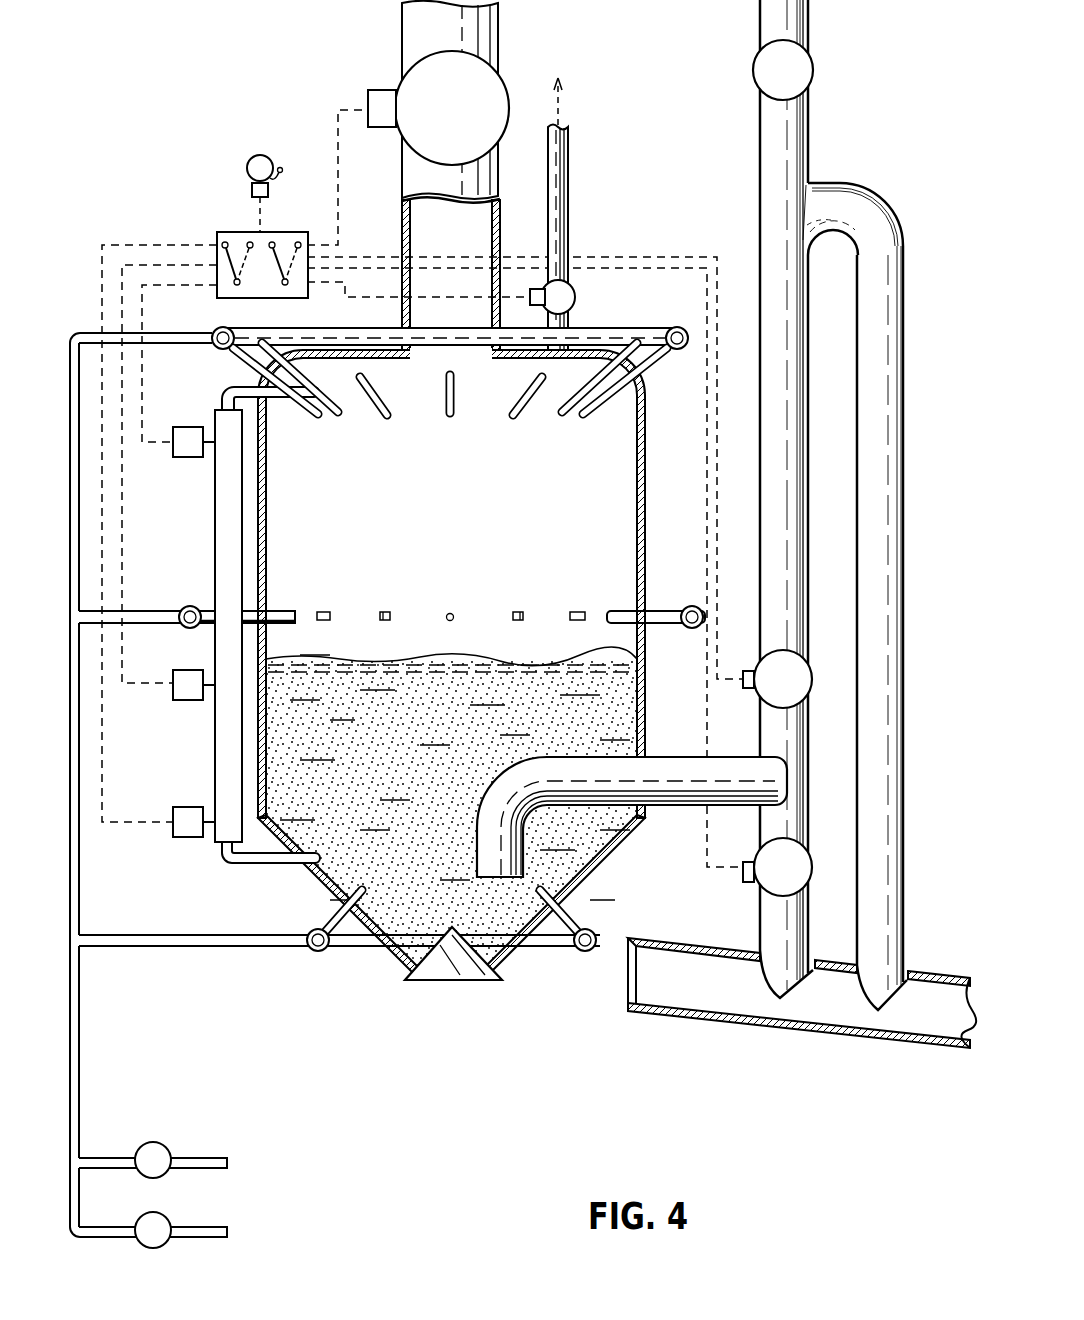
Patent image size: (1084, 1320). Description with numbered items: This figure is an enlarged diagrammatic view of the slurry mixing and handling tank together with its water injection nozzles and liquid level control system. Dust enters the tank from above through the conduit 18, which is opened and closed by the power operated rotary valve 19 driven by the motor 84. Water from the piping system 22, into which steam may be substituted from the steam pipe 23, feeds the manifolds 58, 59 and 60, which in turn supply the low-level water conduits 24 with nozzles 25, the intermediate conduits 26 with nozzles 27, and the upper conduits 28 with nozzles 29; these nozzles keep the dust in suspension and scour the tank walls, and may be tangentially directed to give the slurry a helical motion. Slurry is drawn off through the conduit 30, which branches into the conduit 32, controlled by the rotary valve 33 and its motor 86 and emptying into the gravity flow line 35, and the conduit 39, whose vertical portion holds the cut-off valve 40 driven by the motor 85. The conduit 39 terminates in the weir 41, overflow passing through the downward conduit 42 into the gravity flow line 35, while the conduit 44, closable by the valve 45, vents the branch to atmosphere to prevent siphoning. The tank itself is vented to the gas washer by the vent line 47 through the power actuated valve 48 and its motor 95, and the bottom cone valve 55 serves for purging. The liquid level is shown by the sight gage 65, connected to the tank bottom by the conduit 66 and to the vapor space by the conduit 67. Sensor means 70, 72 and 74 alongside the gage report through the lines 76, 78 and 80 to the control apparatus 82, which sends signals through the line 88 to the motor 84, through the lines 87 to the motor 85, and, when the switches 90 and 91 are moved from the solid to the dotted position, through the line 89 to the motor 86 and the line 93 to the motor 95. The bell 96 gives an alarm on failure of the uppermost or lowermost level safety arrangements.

The conduit 18 is at (498, 17).
The rotary valve 19 is at (497, 128).
The piping system 22 is at (79, 1058).
The steam pipe 23 is at (213, 1227).
The water conduits 24 is at (337, 918).
The nozzles 25 is at (311, 873).
The water conduits 26 is at (206, 632).
The nozzles 27 is at (380, 612).
The water conduits 28 is at (250, 366).
The nozzles 29 is at (322, 417).
The conduit 30 is at (643, 780).
The conduit 32 is at (797, 790).
The rotary valve 33 is at (812, 869).
The gravity flow line 35 is at (931, 1016).
The conduit 39 is at (775, 483).
The cut-off valve 40 is at (812, 681).
The weir 41 is at (834, 228).
The conduit 42 is at (890, 532).
The conduit 44 is at (808, 137).
The valve 45 is at (812, 70).
The vent line 47 is at (568, 183).
The valve 48 is at (578, 295).
The bottom cone valve 55 is at (446, 968).
The manifold 58 is at (318, 952).
The manifold 59 is at (190, 605).
The manifold 60 is at (215, 328).
The sight gage 65 is at (222, 516).
The conduit 66 is at (256, 862).
The conduit 67 is at (280, 398).
The sensor means 70 is at (182, 840).
The sensor means 72 is at (188, 702).
The sensor means 74 is at (180, 460).
The electrical or fluid pressure line 76 is at (103, 745).
The electrical or fluid pressure line 78 is at (123, 533).
The electrical or fluid pressure line 80 is at (143, 395).
The control apparatus 82 is at (268, 280).
The motor 84 is at (367, 80).
The motor 85 is at (748, 690).
The motor 86 is at (745, 880).
The electrical or fluid pressure lines 87 is at (682, 253).
The electrical or fluid pressure line 88 is at (338, 172).
The electrical or fluid pressure line 89 is at (706, 430).
The switch 90 is at (242, 240).
The switch 91 is at (288, 240).
The electrical or fluid pressure line 93 is at (343, 300).
The motor 95 is at (533, 305).
The bell 96 is at (270, 158).